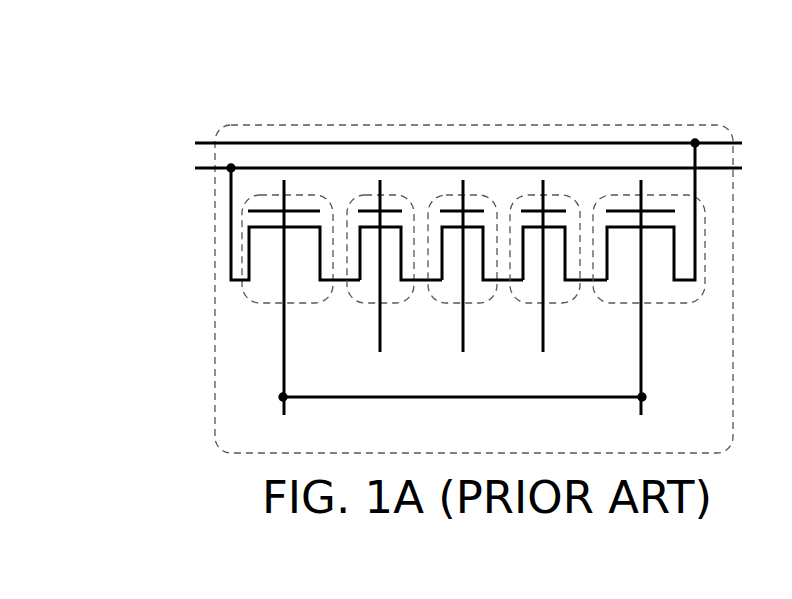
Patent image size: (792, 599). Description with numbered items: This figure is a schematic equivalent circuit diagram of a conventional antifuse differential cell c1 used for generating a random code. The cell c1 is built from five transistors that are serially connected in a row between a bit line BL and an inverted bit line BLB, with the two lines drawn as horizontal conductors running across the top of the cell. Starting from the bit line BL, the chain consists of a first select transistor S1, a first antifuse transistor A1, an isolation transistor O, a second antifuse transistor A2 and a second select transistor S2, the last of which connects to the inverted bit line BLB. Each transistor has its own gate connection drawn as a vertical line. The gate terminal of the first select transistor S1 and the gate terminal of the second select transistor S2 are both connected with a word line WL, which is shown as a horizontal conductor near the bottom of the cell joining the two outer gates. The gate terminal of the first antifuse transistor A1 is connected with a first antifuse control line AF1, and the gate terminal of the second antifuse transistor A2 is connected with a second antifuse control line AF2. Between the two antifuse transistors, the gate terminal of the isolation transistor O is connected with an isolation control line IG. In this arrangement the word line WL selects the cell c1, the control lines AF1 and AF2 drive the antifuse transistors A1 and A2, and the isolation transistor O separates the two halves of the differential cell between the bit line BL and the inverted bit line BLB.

The inverted bit line BLB is at (441, 144).
The bit line BL is at (450, 169).
The word line WL is at (459, 422).
The antifuse differential cell c1 is at (711, 447).
The first select transistor S1 is at (262, 302).
The first antifuse transistor A1 is at (366, 302).
The first antifuse control line AF1 is at (381, 282).
The isolation transistor O is at (478, 302).
The isolation control line IG is at (464, 282).
The second antifuse transistor A2 is at (556, 302).
The second antifuse control line AF2 is at (541, 282).
The second select transistor S2 is at (658, 302).